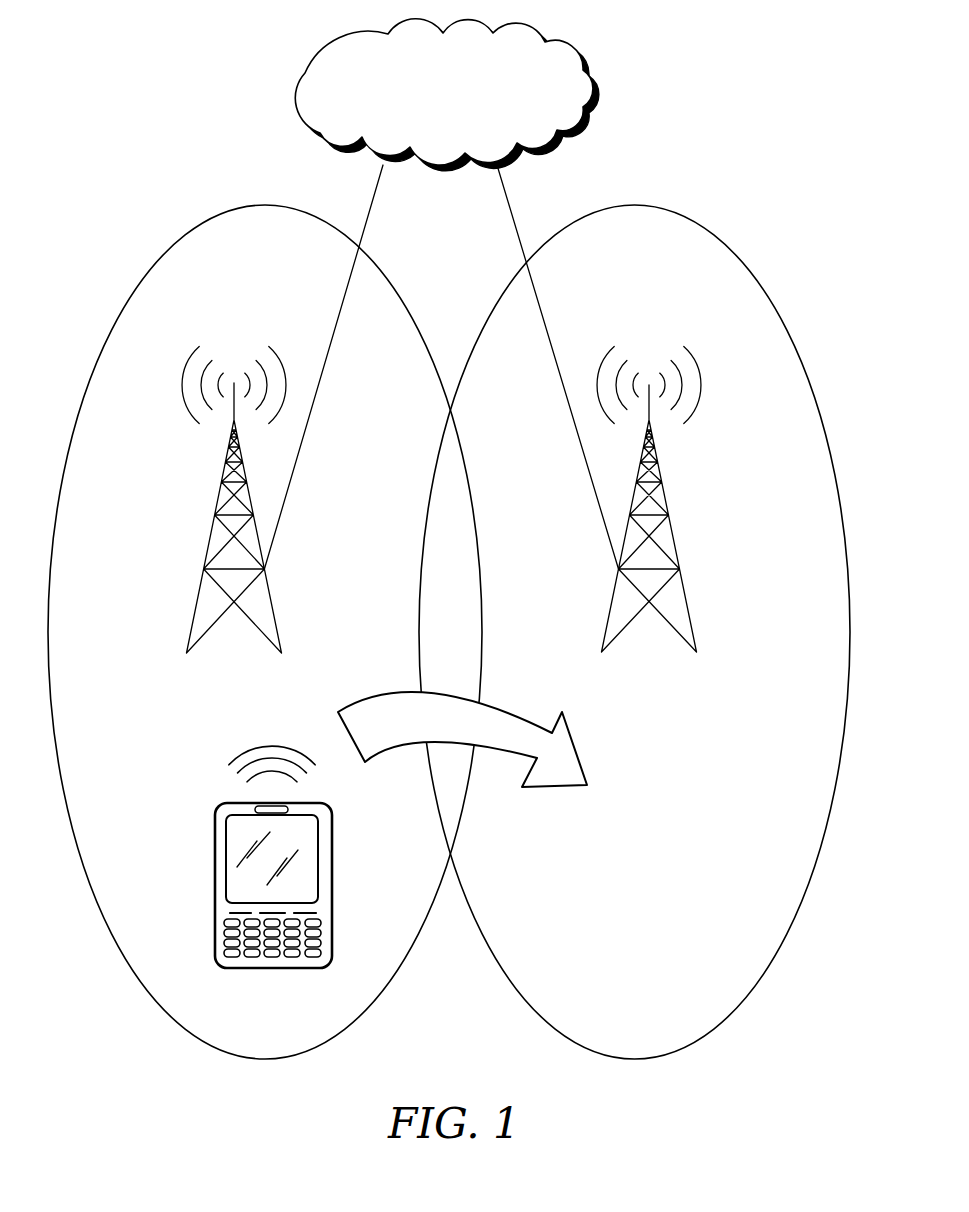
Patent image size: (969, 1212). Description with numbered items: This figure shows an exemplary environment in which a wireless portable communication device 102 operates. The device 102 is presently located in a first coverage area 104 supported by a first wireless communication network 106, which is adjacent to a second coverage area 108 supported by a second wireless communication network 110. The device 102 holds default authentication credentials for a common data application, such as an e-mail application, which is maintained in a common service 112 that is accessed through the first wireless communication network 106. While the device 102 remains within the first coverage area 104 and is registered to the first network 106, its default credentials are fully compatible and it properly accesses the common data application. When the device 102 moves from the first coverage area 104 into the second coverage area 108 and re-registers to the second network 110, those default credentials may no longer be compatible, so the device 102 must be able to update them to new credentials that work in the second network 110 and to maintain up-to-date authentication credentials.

The wireless portable communication device 102 is at (215, 884).
The first coverage area 104 is at (180, 243).
The first wireless communication network 106 is at (204, 569).
The second coverage area 108 is at (723, 241).
The second wireless communication network 110 is at (680, 569).
The common service 112 is at (305, 73).